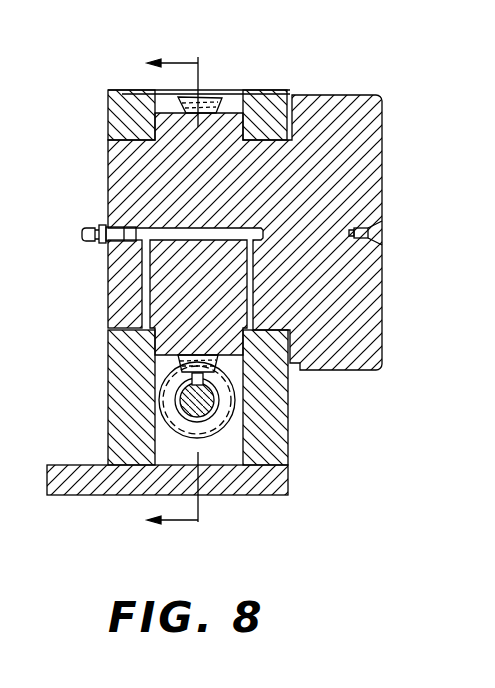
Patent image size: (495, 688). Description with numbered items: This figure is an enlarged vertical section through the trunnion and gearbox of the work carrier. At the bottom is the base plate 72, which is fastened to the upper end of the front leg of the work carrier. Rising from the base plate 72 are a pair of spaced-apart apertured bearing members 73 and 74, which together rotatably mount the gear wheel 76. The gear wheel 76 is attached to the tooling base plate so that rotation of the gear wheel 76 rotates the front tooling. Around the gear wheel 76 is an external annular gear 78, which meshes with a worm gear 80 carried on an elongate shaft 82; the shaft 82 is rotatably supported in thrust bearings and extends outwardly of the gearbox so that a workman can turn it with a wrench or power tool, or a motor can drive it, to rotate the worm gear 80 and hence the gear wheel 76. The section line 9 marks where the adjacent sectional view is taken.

The section line 9- 9 is at (182, 292).
The base plate 72 is at (103, 496).
The apertured bearing member 73 is at (108, 403).
The apertured bearing member 74 is at (288, 441).
The gear wheel 76 is at (382, 156).
The external annular gear 78 is at (222, 95).
The worm gear 80 is at (234, 410).
The elongate shaft 82 is at (197, 417).